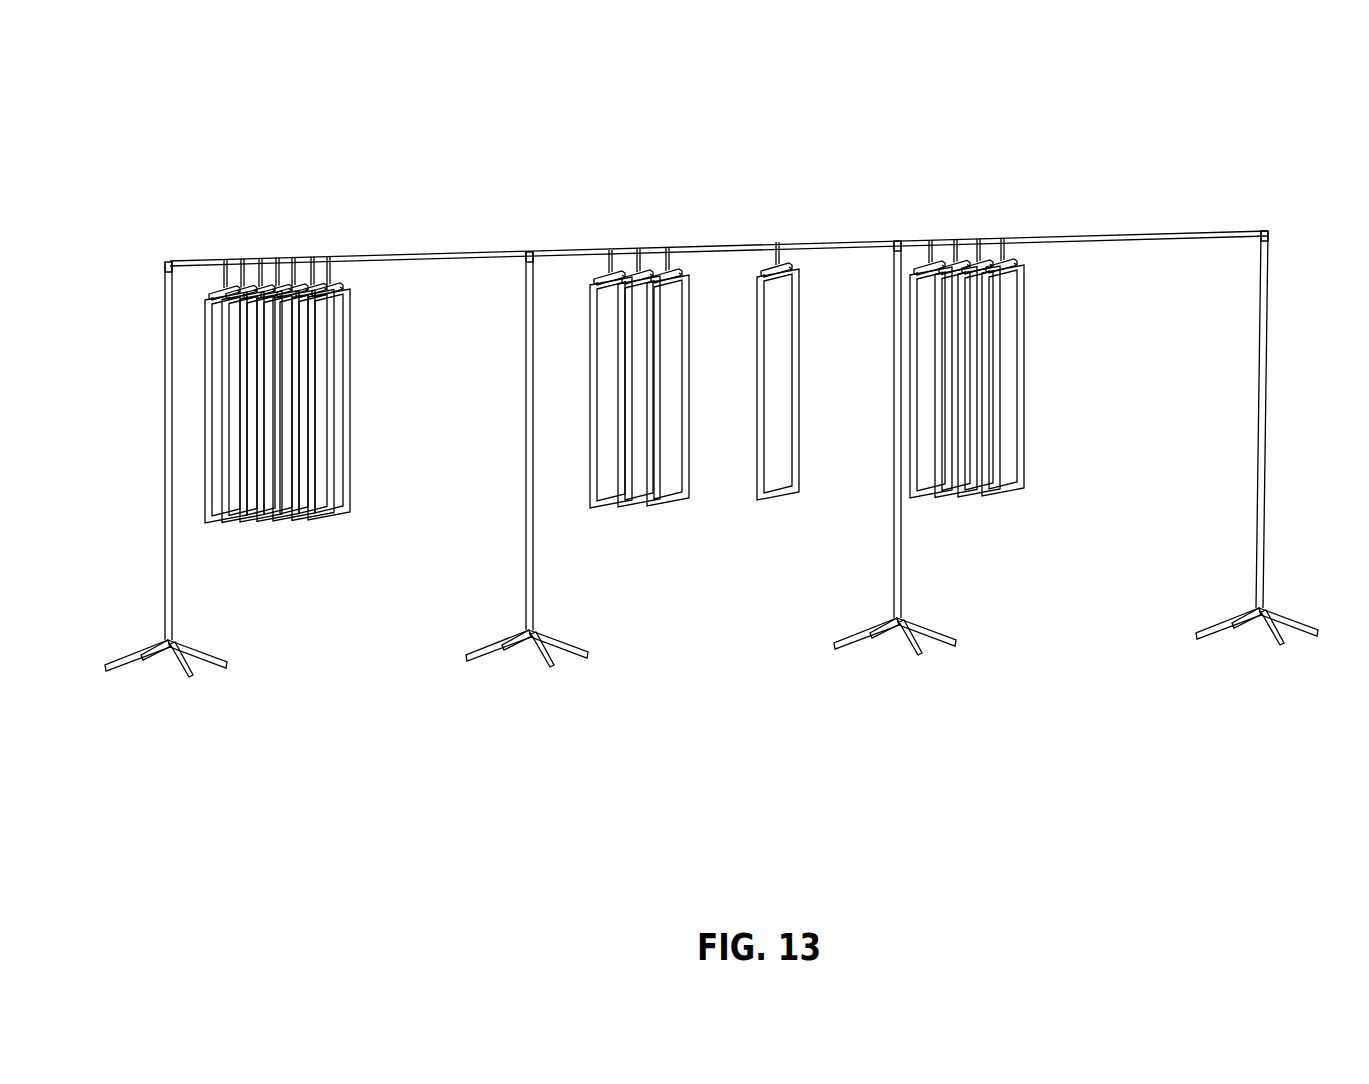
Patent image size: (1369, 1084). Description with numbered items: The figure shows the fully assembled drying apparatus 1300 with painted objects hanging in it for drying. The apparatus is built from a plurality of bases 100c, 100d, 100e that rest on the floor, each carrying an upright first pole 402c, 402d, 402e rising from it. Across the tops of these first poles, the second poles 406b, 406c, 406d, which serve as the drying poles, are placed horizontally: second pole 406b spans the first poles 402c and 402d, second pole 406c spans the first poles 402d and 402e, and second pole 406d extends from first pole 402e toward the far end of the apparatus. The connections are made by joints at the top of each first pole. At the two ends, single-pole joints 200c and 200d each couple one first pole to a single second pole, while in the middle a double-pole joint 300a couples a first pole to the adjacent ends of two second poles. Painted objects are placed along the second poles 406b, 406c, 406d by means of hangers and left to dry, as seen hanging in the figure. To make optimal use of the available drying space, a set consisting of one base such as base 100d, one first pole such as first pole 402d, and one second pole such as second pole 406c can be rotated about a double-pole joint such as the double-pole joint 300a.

The drying apparatus 1300 is at (227, 139).
The single-pole joint 200c is at (168, 262).
The single-pole joint 200d is at (1267, 230).
The double-pole joint 300a is at (534, 252).
The second pole 406b is at (368, 258).
The second pole 406c is at (730, 247).
The second pole 406d is at (1120, 244).
The first pole 402c is at (173, 553).
The first pole 402d is at (533, 530).
The first pole 402e is at (899, 535).
The base 100c is at (188, 671).
The base 100d is at (512, 634).
The base 100e is at (863, 634).